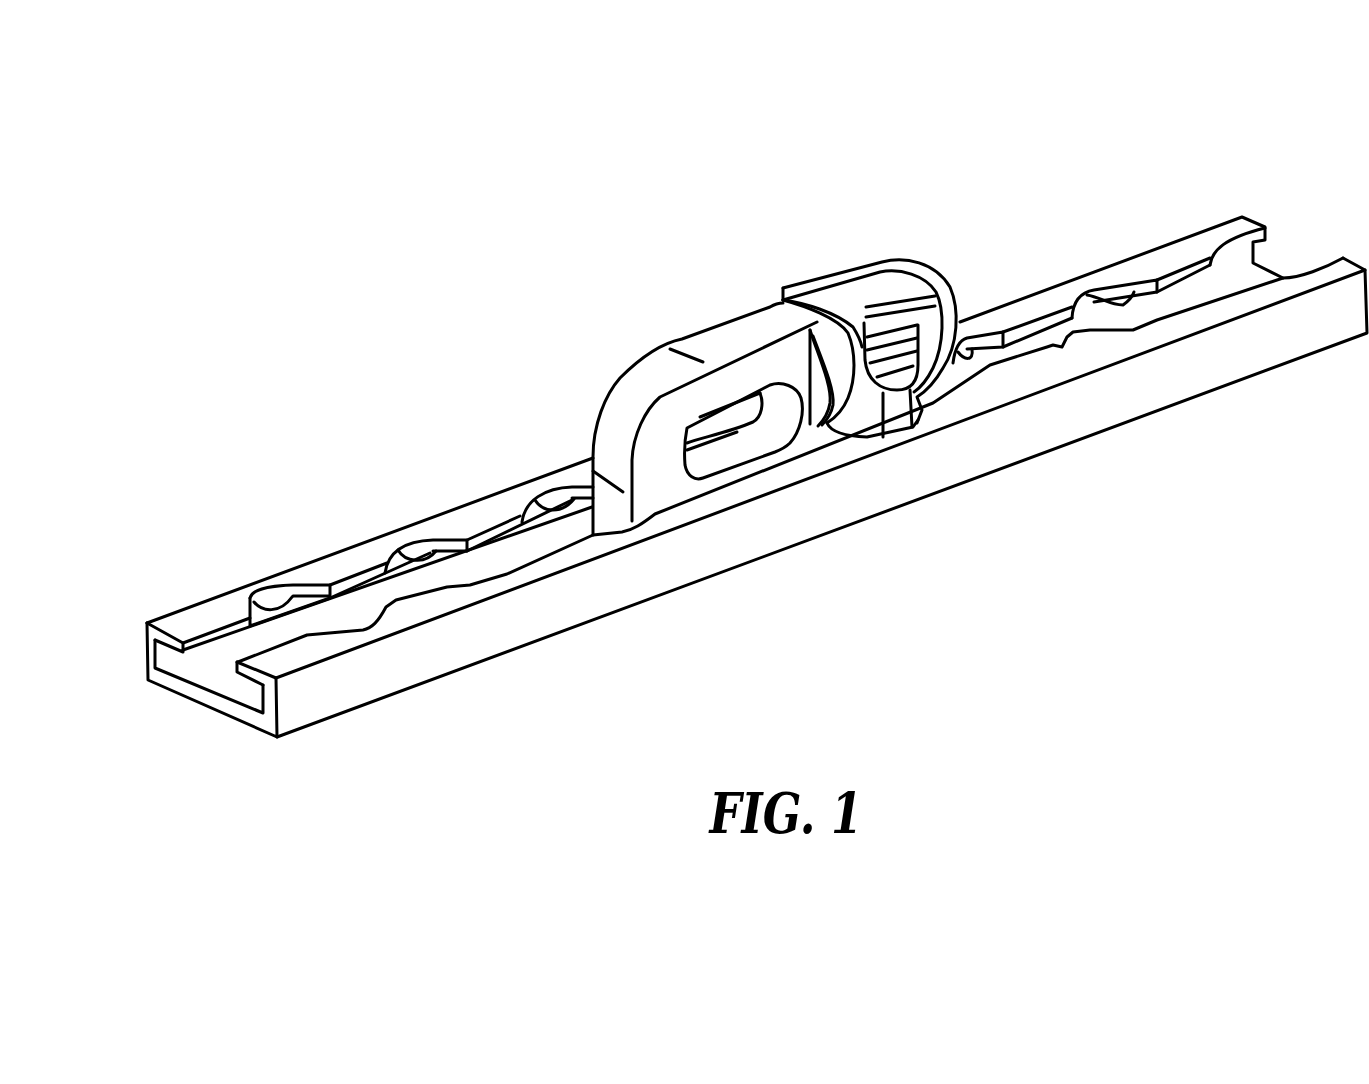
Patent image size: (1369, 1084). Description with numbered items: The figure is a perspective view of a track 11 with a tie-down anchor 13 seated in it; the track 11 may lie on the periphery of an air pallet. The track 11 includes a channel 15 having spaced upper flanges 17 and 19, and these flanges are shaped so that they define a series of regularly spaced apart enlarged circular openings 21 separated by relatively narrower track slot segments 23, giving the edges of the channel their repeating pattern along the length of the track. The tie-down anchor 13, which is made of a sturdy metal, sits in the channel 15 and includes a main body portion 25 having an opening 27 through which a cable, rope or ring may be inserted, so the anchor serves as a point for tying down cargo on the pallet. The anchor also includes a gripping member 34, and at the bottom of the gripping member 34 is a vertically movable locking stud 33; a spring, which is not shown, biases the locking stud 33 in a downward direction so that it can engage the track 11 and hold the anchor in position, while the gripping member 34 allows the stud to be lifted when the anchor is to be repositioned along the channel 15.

The track 11 is at (757, 420).
The tie-down anchor 13 is at (806, 395).
The channel 15 is at (700, 511).
The upper flange 17 is at (252, 673).
The upper flange 19 is at (176, 641).
The enlarged circular openings 21 is at (298, 606).
The track slot segments 23 is at (349, 590).
The main body portion 25 is at (721, 328).
The opening 27 is at (731, 457).
The locking stud 33 is at (893, 418).
The gripping member 34 is at (947, 293).